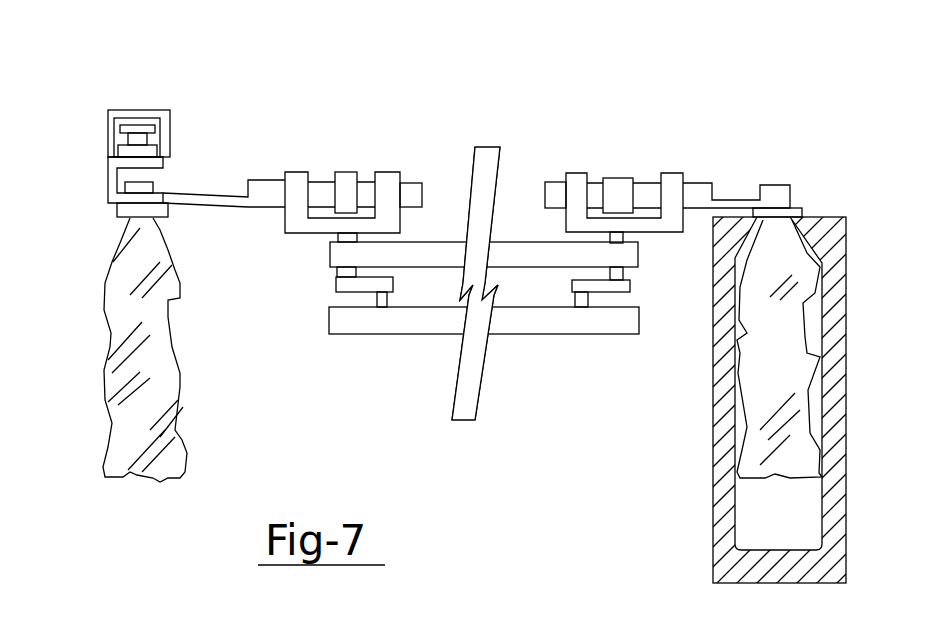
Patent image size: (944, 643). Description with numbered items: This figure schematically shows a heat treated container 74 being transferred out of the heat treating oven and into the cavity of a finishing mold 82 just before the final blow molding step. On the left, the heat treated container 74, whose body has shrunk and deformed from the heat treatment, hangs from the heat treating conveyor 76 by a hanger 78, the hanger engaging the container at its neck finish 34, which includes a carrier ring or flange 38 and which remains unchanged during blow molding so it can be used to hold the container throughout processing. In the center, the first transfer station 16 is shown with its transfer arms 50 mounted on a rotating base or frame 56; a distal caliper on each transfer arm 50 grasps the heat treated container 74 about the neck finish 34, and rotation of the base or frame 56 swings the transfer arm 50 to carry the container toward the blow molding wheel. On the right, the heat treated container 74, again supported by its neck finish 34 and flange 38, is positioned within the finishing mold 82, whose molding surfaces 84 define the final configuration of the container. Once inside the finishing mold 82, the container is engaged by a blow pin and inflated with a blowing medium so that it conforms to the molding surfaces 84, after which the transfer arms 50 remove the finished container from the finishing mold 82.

The first transfer station 16 is at (500, 122).
The neck finish 34 is at (156, 187).
The carrier ring or flange 38 is at (118, 210).
The transfer arm 50 is at (347, 180).
The rotating base or frame 56 is at (376, 334).
The heat treated container 74 is at (158, 368).
The heat treating conveyor 76 is at (138, 113).
The hanger 78 is at (112, 182).
The finishing mold 82 is at (723, 467).
The molding surfaces 84 is at (760, 513).